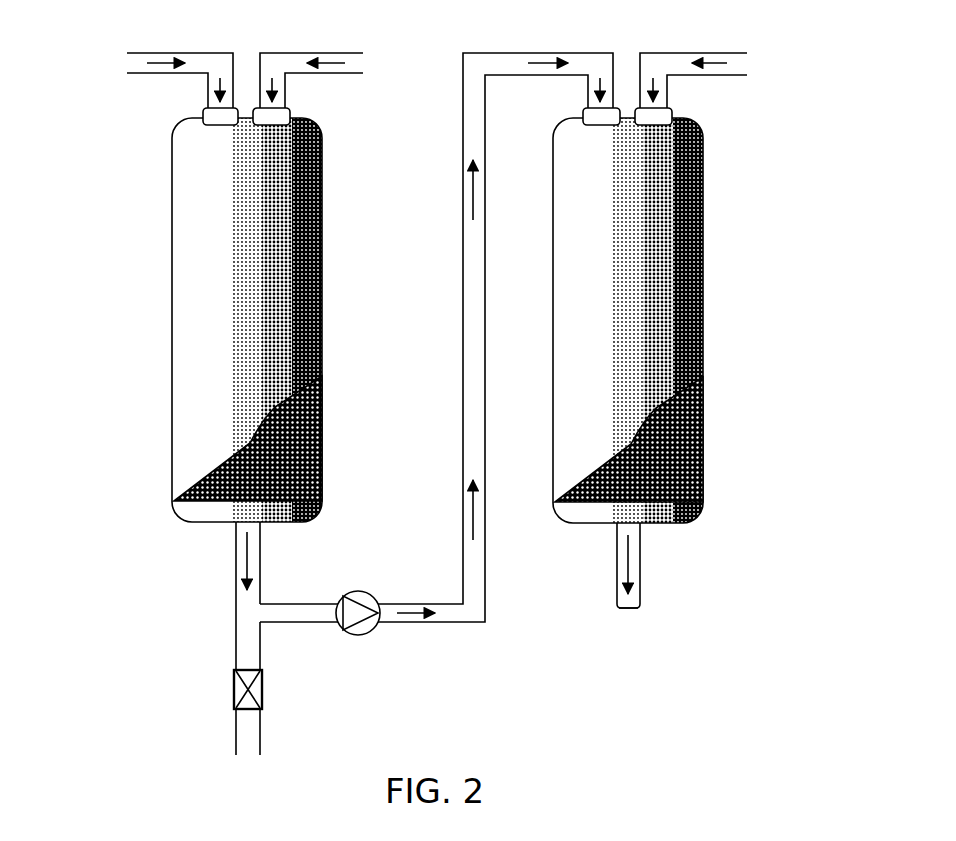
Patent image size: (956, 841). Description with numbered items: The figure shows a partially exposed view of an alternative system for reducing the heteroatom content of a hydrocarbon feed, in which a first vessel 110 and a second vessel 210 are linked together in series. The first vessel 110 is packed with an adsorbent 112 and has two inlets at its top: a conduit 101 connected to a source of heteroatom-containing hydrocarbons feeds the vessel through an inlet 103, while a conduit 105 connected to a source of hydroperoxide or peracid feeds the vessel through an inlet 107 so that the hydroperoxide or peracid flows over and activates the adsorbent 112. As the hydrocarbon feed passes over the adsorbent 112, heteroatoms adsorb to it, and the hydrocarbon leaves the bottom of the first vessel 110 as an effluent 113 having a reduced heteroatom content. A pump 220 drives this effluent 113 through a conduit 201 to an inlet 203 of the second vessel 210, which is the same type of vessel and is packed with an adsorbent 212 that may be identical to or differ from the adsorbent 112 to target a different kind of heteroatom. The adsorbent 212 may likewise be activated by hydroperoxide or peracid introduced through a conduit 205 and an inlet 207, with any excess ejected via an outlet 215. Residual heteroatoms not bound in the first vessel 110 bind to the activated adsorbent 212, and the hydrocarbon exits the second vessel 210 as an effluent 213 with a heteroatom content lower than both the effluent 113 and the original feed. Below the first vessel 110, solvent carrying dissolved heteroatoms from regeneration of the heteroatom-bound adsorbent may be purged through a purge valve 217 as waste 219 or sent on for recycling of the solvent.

The conduit 101 is at (132, 53).
The inlet 103 is at (203, 115).
The conduit 105 is at (347, 53).
The inlet 107 is at (290, 113).
The vessel 110 is at (172, 268).
The adsorbent 112 is at (323, 430).
The effluent 113 is at (260, 568).
The conduit 201 is at (514, 53).
The inlet 203 is at (583, 116).
The conduit 205 is at (726, 53).
The inlet 207 is at (672, 113).
The vessel 210 is at (703, 266).
The adsorbent 212 is at (703, 432).
The effluent 213 is at (640, 572).
The outlet 215 is at (634, 610).
The purge valve 217 is at (233, 695).
The waste 219 is at (243, 735).
The pump 220 is at (350, 635).